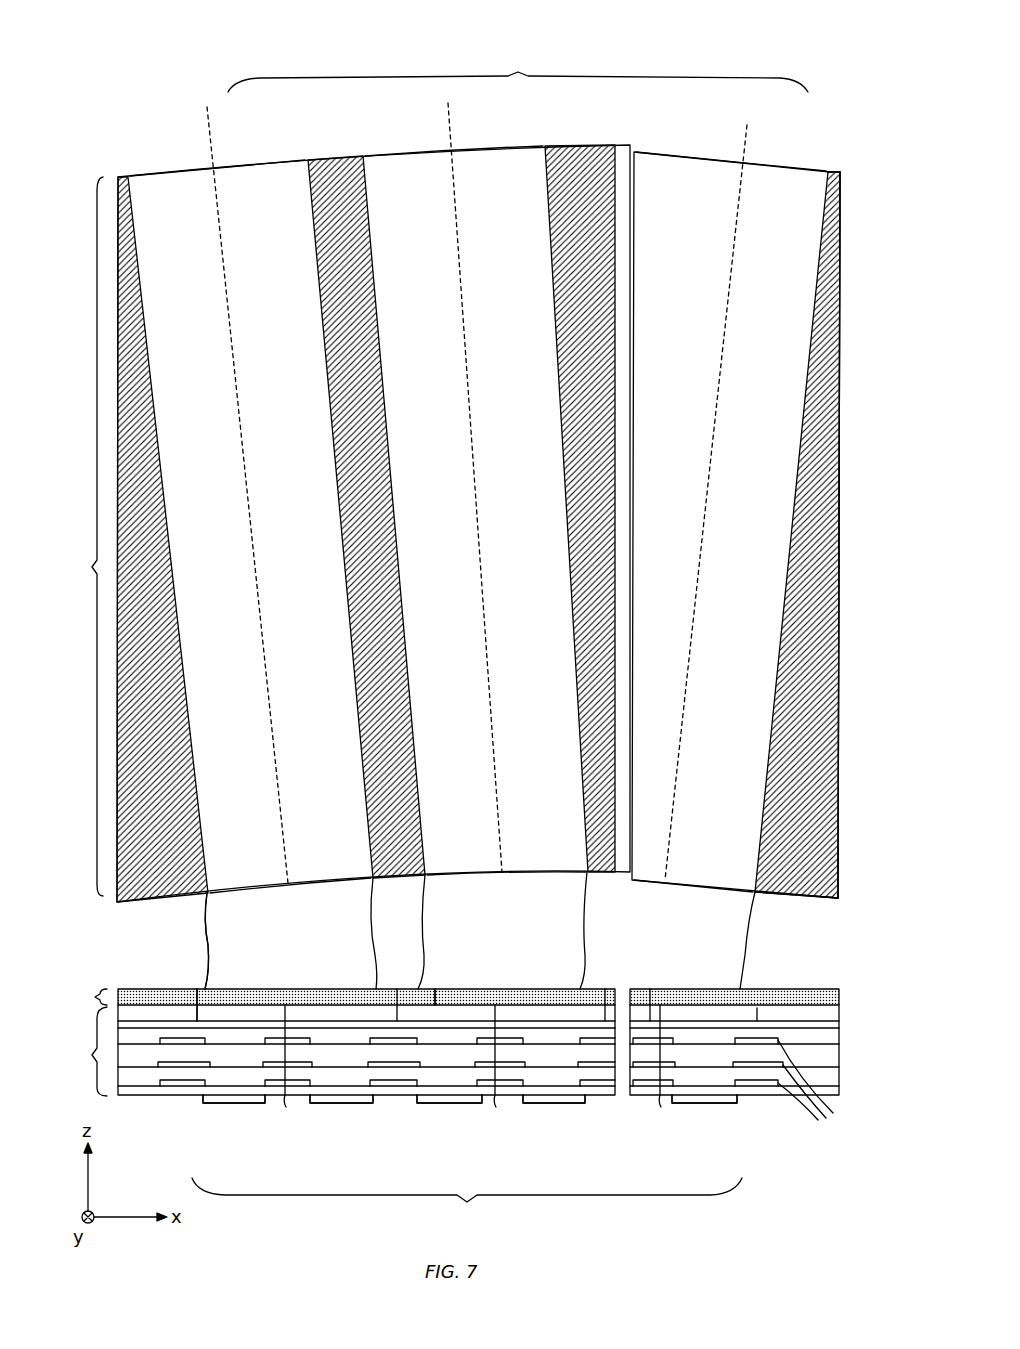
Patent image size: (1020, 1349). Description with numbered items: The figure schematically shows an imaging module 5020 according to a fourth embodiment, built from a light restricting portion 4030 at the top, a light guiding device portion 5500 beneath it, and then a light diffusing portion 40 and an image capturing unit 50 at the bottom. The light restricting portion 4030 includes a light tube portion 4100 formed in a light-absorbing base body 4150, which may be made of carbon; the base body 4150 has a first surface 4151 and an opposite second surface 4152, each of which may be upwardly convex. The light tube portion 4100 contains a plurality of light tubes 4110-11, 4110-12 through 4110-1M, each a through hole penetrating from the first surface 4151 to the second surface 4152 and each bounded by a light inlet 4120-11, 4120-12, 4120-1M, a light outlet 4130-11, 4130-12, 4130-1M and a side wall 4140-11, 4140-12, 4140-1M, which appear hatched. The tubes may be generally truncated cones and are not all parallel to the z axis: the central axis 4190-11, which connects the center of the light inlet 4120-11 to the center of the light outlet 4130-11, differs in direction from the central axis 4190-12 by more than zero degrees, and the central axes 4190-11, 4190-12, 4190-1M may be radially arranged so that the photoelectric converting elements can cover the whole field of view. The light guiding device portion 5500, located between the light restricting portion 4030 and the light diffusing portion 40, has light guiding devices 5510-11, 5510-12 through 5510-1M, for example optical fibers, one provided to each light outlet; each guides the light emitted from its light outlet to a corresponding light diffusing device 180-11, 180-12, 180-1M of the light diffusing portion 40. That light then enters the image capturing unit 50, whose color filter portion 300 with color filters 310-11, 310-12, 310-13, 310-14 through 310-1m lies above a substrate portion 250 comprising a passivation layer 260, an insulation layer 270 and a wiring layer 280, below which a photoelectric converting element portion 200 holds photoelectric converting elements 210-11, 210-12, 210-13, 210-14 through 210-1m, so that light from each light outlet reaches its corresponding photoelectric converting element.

The imaging module 5020 is at (497, 22).
The light tube portion 4100 is at (518, 70).
The light restricting portion 4030 is at (73, 536).
The light tube 4110-11 is at (253, 157).
The light tube 4110-12 is at (515, 143).
The light tube 4110-1M is at (712, 157).
The light inlet 4120-11 is at (172, 175).
The light inlet 4120-12 is at (490, 150).
The light inlet 4120-1M is at (687, 159).
The light outlet 4130-11 is at (273, 885).
The light outlet 4130-12 is at (490, 872).
The light outlet 4130-1M is at (648, 880).
The side wall 4140-11 is at (143, 333).
The side wall 4140-12 is at (368, 227).
The side wall 4140-1M is at (817, 317).
The central axis 4190-11 is at (208, 122).
The central axis 4190-12 is at (449, 126).
The central axis 4190-1M is at (706, 502).
The base body 4150 is at (839, 440).
The first surface 4151 is at (832, 172).
The second surface 4152 is at (830, 860).
The light guiding device portion 5500 is at (200, 937).
The light guiding device 5510-11 is at (205, 960).
The light guiding device 5510-12 is at (585, 965).
The light guiding device 5510-1M is at (748, 930).
The color filter 310-11 is at (227, 1010).
The color filter 310-12 is at (313, 1005).
The color filter 310-13 is at (433, 1005).
The color filter 310-14 is at (525, 1010).
The color filter 310-1m is at (716, 1010).
The color filter portion 300 is at (840, 1012).
The passivation layer 260 is at (840, 1026).
The insulation layer 270 is at (840, 1073).
The wiring layer 280 is at (819, 1091).
The substrate portion 250 is at (773, 1097).
The light diffusing device 180-11 is at (282, 1073).
The light diffusing device 180-12 is at (495, 1073).
The light diffusing device 180-1M is at (662, 1073).
The photoelectric converting element 210-11 is at (233, 1105).
The photoelectric converting element 210-12 is at (343, 1103).
The photoelectric converting element 210-13 is at (448, 1105).
The photoelectric converting element 210-14 is at (555, 1105).
The photoelectric converting element 210-1m is at (713, 1103).
The photoelectric converting element portion 200 is at (467, 1207).
The light diffusing portion 40 is at (453, 998).
The image capturing unit 50 is at (85, 1051).